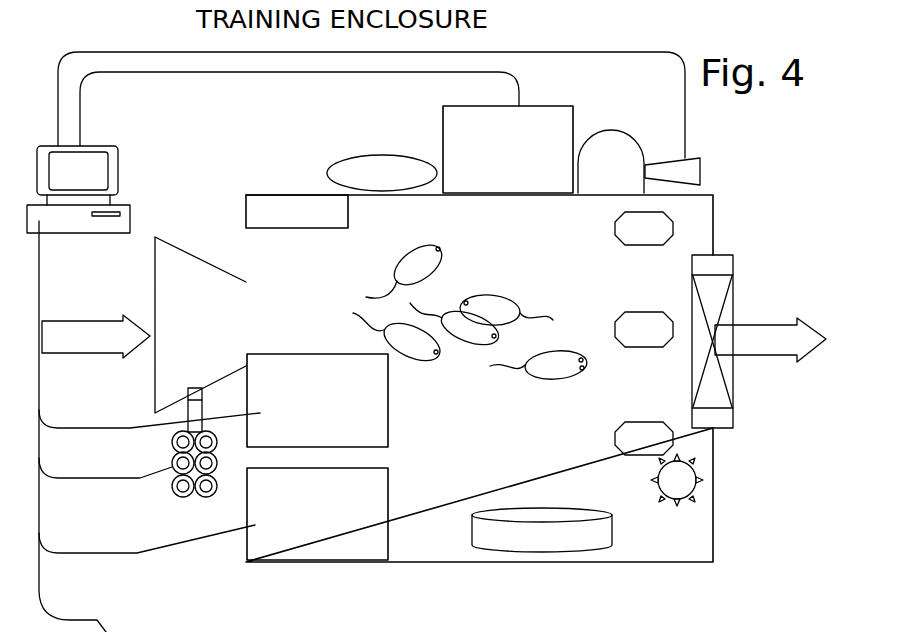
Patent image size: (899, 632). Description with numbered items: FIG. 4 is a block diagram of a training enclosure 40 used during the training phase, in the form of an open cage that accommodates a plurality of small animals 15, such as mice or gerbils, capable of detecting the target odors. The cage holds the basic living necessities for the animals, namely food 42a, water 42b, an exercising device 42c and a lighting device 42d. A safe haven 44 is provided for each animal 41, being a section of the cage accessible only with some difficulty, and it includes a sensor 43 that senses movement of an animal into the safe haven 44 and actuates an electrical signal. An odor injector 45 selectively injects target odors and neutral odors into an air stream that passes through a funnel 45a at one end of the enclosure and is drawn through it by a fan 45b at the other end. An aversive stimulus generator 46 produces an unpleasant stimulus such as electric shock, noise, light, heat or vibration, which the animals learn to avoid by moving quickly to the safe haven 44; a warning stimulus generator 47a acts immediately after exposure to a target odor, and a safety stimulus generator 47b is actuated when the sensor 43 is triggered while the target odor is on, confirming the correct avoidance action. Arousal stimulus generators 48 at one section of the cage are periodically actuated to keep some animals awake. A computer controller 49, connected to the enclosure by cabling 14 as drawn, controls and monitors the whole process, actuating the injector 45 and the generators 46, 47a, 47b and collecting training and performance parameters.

The control cable / training system 14 is at (234, 569).
The small animals 15 is at (475, 296).
The training enclosure 40 is at (280, 185).
The animal 41 is at (443, 259).
The food 42a is at (336, 228).
The water 42b is at (420, 166).
The exercising device 42c is at (527, 512).
The lighting device 42d is at (683, 491).
The sensor 43 is at (688, 168).
The safe haven 44 is at (620, 152).
The odor injector 45 is at (182, 487).
The funnel 45a is at (153, 285).
The fan 45b is at (728, 310).
The aversive stimulus generator 46 is at (388, 520).
The warning stimulus generator 47a is at (260, 356).
The safety stimulus generator 47b is at (545, 108).
The arousal stimulus generator 48 is at (627, 228).
The computer controller 49 is at (112, 173).